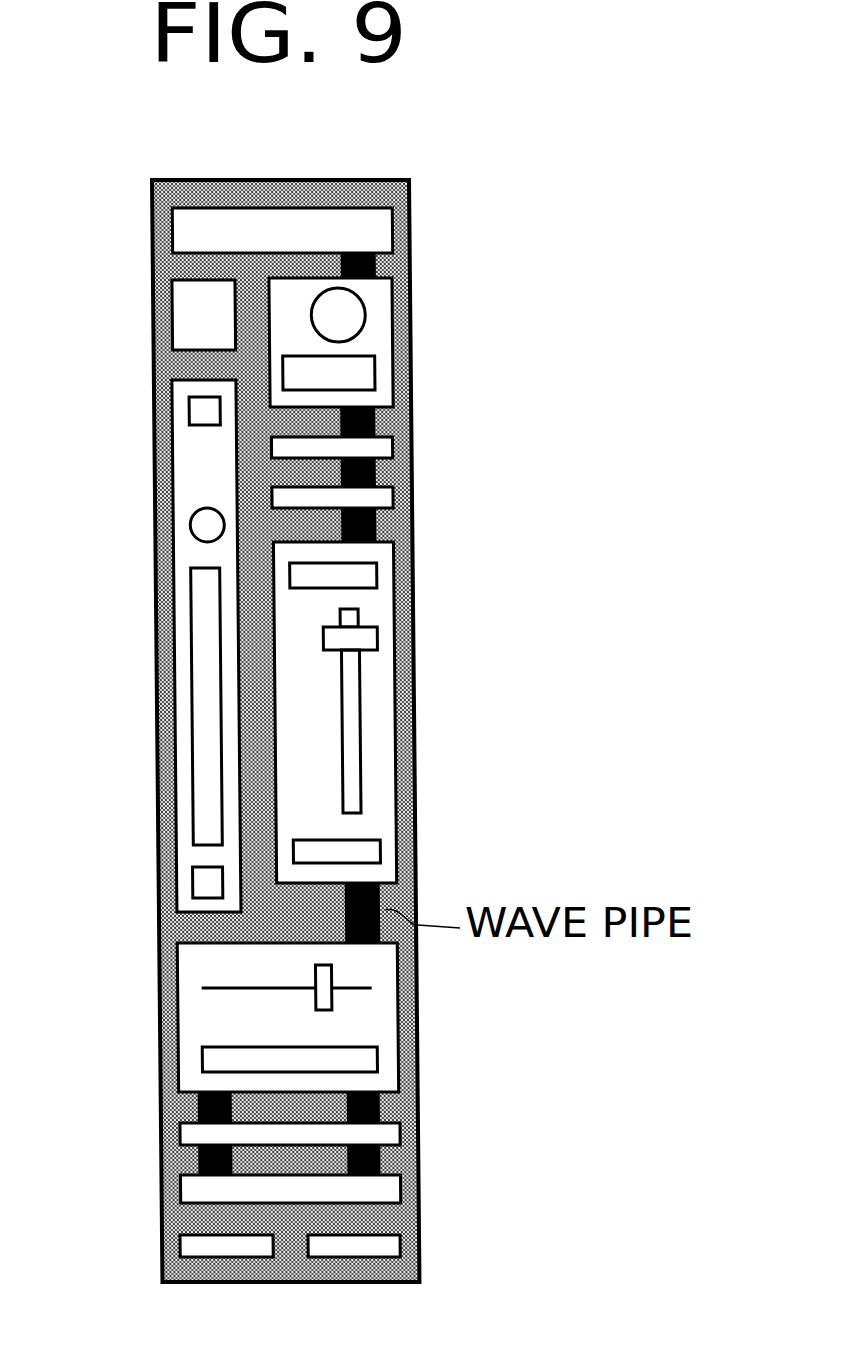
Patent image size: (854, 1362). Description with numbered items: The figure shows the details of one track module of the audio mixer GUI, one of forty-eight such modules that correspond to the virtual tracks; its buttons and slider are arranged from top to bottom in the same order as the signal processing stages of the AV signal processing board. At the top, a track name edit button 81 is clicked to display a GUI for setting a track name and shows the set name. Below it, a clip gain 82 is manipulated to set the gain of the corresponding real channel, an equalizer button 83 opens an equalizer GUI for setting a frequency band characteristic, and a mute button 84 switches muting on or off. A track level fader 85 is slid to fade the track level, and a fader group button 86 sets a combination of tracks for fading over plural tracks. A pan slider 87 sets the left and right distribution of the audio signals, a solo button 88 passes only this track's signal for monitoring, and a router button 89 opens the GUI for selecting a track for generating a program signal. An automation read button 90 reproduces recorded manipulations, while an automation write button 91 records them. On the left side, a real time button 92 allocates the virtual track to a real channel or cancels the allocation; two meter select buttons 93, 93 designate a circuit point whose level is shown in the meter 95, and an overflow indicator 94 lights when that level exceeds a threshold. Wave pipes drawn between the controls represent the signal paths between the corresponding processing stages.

The track name edit button 81 is at (372, 228).
The clip gain 82 is at (373, 292).
The equalizer button 83 is at (375, 443).
The mute button 84 is at (380, 497).
The track level fader 85 is at (365, 639).
The fader group button 86 is at (372, 851).
The pan slider 87 is at (227, 988).
The solo button 88 is at (378, 1132).
The router button 89 is at (385, 1187).
The automation read button 90 is at (388, 1244).
The automation write button 91 is at (188, 1249).
The real time button 92 is at (192, 314).
The meter select button 93 is at (197, 412).
The overflow indicator 94 is at (200, 530).
The meter 95 is at (203, 683).